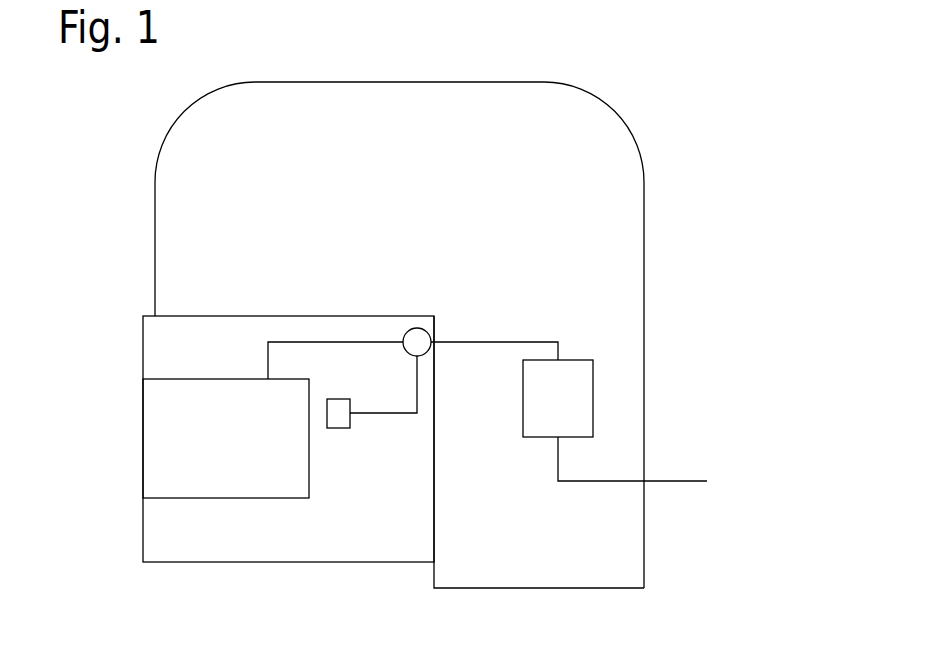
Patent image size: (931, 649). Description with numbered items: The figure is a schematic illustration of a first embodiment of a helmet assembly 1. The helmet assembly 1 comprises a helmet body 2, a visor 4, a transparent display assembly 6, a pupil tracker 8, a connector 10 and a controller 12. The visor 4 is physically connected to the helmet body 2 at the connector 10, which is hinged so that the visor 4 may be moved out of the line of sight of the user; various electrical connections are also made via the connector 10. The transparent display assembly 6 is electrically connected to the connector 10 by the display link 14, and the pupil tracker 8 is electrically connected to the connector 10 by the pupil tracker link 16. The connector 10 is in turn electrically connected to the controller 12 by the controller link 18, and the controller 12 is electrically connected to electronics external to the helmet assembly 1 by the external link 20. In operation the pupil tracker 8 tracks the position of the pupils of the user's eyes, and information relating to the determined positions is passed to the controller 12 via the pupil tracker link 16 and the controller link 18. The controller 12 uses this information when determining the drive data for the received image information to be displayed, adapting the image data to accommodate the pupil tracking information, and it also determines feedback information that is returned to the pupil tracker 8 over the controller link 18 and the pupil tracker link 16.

The helmet assembly 1 is at (638, 77).
The helmet body 2 is at (431, 108).
The visor 4 is at (226, 537).
The transparent display assembly 6 is at (185, 444).
The pupil tracker 8 is at (343, 427).
The connector 10 is at (417, 342).
The controller 12 is at (585, 398).
The display link 14 is at (328, 340).
The pupil tracker link 16 is at (388, 413).
The controller link 18 is at (500, 340).
The external link 20 is at (669, 481).